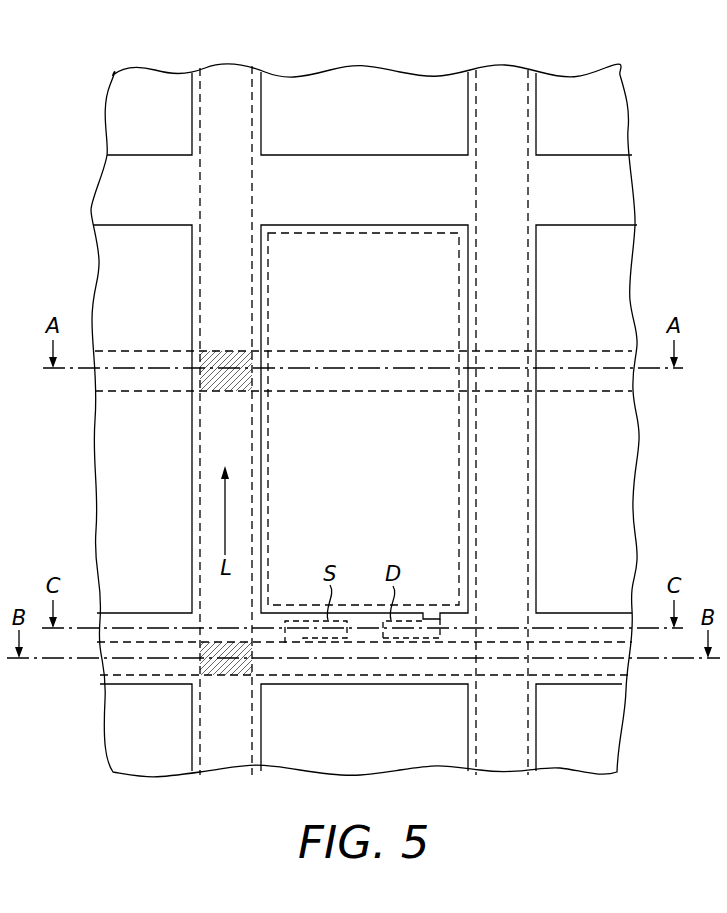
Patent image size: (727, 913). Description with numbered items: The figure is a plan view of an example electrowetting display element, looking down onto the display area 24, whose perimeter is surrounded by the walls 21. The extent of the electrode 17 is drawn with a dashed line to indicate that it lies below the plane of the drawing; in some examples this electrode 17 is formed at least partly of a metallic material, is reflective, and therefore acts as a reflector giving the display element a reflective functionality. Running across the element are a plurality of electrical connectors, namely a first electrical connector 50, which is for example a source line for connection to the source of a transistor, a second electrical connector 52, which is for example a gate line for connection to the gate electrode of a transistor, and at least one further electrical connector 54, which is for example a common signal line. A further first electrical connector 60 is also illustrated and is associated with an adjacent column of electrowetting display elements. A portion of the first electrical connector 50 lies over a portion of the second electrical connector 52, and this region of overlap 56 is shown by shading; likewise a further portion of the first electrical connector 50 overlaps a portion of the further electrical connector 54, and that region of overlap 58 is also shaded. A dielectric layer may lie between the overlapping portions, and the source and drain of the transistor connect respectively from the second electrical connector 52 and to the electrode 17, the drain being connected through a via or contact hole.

The electrode 17 is at (410, 233).
The walls 21 is at (362, 168).
The display area 24 is at (353, 310).
The first electrical connector 50 is at (226, 76).
The second electrical connector 52 is at (151, 677).
The further electrical connector 54 is at (151, 393).
The region of overlap 56 is at (225, 677).
The region of overlap 58 is at (225, 393).
The further first electrical connector 60 is at (502, 77).